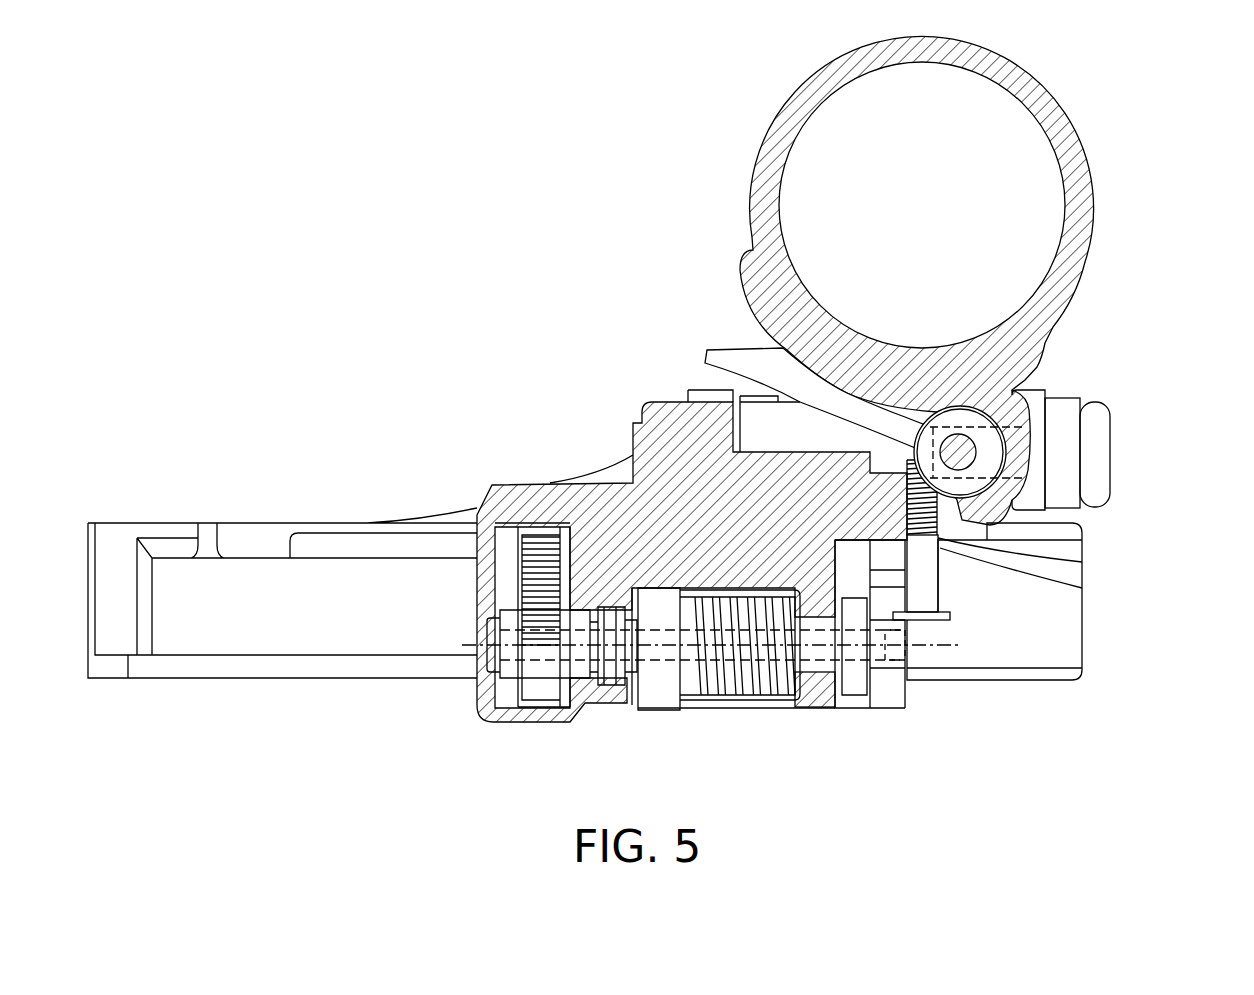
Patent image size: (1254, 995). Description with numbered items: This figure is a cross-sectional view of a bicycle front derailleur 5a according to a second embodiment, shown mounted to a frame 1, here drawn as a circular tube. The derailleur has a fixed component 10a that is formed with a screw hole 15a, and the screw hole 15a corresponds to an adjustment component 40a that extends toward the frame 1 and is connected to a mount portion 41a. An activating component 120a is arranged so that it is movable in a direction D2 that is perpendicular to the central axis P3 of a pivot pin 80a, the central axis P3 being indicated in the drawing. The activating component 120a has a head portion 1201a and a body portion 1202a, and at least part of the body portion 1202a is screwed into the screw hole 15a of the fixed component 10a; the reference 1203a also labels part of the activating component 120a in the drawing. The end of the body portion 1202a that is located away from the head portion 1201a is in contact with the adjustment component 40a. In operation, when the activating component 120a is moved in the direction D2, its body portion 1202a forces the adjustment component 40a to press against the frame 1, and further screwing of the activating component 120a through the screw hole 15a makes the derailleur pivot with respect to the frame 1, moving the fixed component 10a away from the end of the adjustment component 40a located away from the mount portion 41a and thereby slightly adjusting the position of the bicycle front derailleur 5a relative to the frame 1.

The frame 1 is at (1090, 193).
The bicycle front derailleur 5a is at (571, 390).
The fixed component 10a is at (660, 428).
The screw hole 15a is at (1082, 562).
The adjustment component 40a is at (933, 416).
The mount portion 41a is at (980, 452).
The pivot pin 80a is at (853, 662).
The activating component 120a is at (955, 603).
The head portion 1201a is at (940, 621).
The body portion 1202a is at (930, 576).
The shank portion 1203a is at (1082, 588).
The central axis P3 is at (928, 645).
The direction D2 is at (1210, 568).